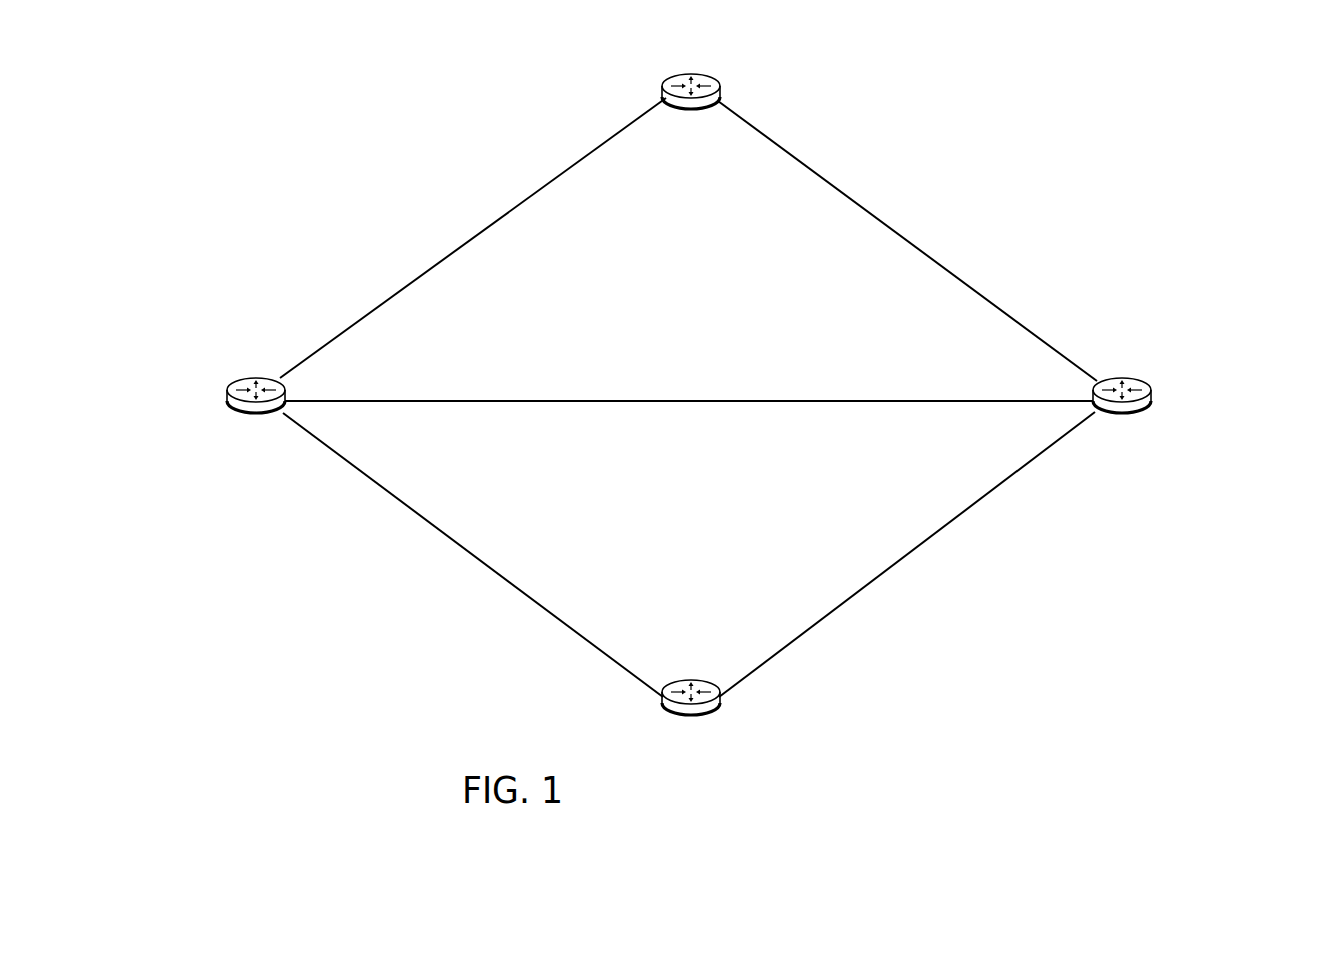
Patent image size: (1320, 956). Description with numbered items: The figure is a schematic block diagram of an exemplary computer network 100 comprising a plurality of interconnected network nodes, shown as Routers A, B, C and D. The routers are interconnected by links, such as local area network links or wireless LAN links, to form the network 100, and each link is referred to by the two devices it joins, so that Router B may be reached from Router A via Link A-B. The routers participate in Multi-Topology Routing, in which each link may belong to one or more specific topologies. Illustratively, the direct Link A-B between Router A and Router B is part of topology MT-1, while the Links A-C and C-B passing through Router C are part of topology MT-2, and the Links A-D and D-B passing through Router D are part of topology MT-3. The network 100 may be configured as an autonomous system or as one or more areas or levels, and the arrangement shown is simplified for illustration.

The computer network 100 is at (690, 424).
The Router A is at (250, 413).
The Router B is at (1130, 413).
The Router C is at (695, 110).
The Router D is at (697, 716).
The topology MT-1 is at (586, 401).
The topology MT-2 is at (472, 238).
The topology MT-3 is at (448, 536).